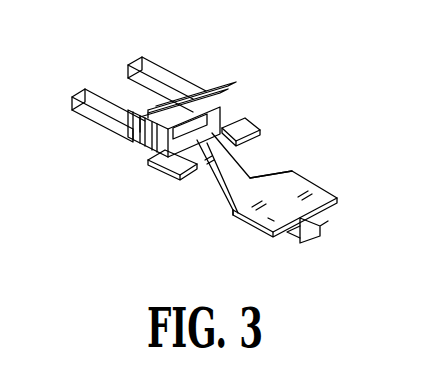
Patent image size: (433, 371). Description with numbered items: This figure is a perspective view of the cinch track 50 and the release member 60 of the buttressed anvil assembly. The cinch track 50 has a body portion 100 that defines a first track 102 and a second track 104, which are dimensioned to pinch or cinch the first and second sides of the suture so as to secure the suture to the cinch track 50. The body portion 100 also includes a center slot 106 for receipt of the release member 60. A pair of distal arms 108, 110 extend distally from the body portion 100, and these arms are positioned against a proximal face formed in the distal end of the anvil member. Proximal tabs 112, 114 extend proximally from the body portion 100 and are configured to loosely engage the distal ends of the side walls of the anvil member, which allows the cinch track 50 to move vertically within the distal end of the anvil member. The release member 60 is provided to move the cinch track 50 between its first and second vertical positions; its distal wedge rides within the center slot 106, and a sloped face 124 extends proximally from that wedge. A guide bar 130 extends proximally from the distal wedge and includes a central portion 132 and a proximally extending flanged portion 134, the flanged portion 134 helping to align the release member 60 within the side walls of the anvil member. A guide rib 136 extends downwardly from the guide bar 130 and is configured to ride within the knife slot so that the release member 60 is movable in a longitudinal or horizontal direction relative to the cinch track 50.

The cinch track 50 is at (129, 98).
The release member 60 is at (298, 210).
The body portion 100 is at (192, 127).
The first track 102 is at (203, 98).
The second track 104 is at (196, 86).
The center slot 106 is at (249, 178).
The distal arm 108 is at (168, 80).
The distal arm 110 is at (85, 92).
The proximal tab 112 is at (240, 118).
The proximal tab 114 is at (156, 165).
The sloped face 124 is at (232, 214).
The guide bar 130 is at (343, 251).
The central portion 132 is at (289, 172).
The flanged portion 134 is at (271, 216).
The guide rib 136 is at (305, 233).